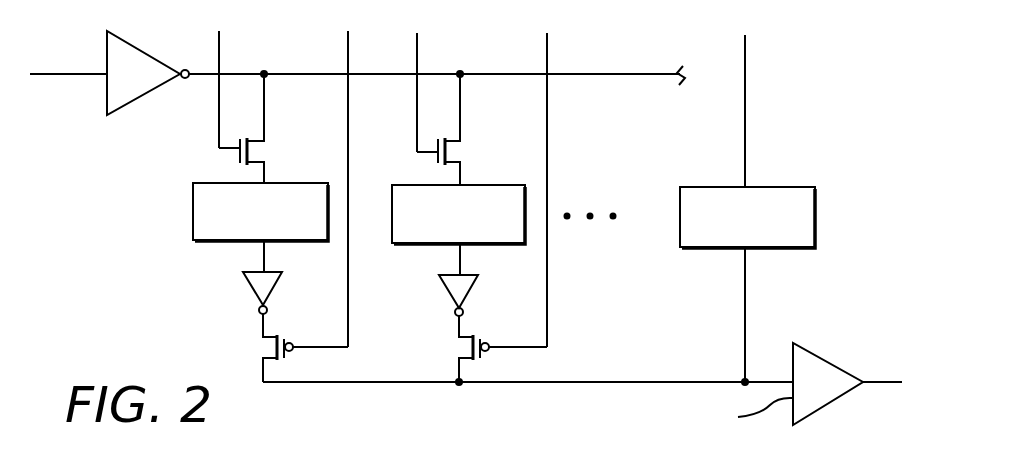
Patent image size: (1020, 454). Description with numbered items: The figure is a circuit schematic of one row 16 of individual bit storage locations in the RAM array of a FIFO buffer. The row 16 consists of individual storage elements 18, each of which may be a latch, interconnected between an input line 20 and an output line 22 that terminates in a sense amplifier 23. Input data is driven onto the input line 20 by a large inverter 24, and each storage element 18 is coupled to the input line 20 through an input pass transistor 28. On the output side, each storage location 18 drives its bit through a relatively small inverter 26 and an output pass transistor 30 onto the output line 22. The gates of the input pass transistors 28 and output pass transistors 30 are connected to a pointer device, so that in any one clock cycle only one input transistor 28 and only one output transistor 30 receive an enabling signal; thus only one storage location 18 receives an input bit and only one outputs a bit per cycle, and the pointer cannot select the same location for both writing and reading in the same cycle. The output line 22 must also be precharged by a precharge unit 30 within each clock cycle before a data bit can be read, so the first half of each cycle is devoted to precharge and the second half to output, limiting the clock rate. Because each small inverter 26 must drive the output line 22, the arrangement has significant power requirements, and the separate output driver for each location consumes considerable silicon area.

The row 16 is at (143, 333).
The storage element 18 is at (198, 244).
The input line 20 is at (600, 74).
The output line 22 is at (575, 382).
The sense amplifier 23 is at (837, 347).
The large inverter 24 is at (138, 56).
The small inverter 26 is at (253, 293).
The input pass transistor 28 is at (257, 159).
The output pass transistor 30 is at (272, 362).